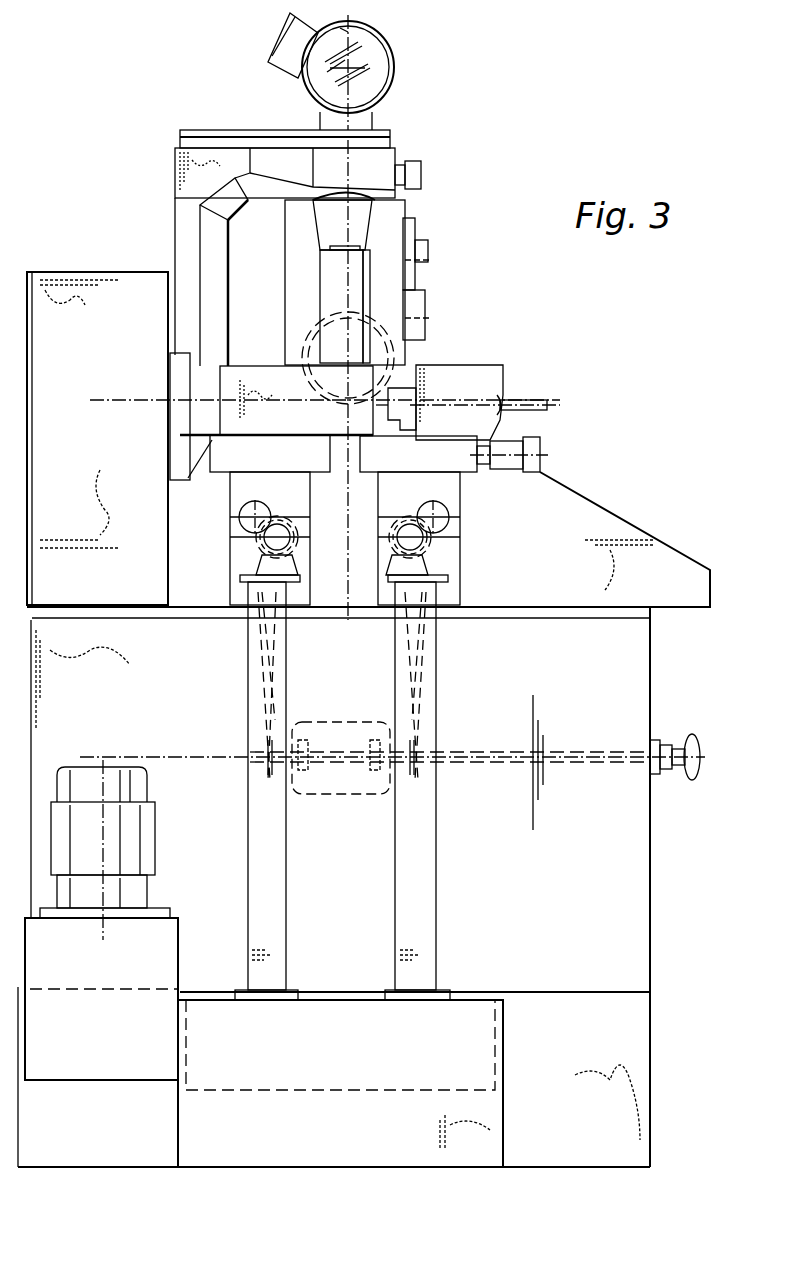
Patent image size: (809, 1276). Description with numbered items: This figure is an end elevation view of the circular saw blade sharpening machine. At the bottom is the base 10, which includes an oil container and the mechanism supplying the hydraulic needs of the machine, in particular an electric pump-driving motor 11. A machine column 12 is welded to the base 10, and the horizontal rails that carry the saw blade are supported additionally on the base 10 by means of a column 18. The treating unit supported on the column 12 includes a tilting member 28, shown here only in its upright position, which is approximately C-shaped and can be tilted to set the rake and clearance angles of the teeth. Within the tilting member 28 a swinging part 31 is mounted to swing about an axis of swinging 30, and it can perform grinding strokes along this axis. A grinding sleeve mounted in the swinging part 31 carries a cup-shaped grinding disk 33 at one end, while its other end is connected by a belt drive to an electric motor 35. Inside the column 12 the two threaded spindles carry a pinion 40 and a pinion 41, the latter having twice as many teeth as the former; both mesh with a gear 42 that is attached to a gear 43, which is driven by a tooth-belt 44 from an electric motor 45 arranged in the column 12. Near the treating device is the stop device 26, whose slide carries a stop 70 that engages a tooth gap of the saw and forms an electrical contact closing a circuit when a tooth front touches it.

The base 10 is at (335, 1062).
The electric pump-driving motor 11 is at (140, 843).
The machine column 12 is at (112, 710).
The column 18 is at (258, 884).
The stop device 26 is at (482, 365).
The tilting member 28 is at (185, 180).
The axis of swinging 30 is at (356, 24).
The swinging part 31 is at (297, 254).
The cup-shaped grinding disk 33 is at (300, 362).
The electric motor 35 is at (378, 57).
The pinion 40 is at (292, 515).
The pinion 41 is at (245, 505).
The gear 42 is at (258, 540).
The gear 43 is at (296, 545).
The tooth-belt 44 is at (262, 640).
The electric motor 45 is at (318, 796).
The stop 70 is at (400, 385).